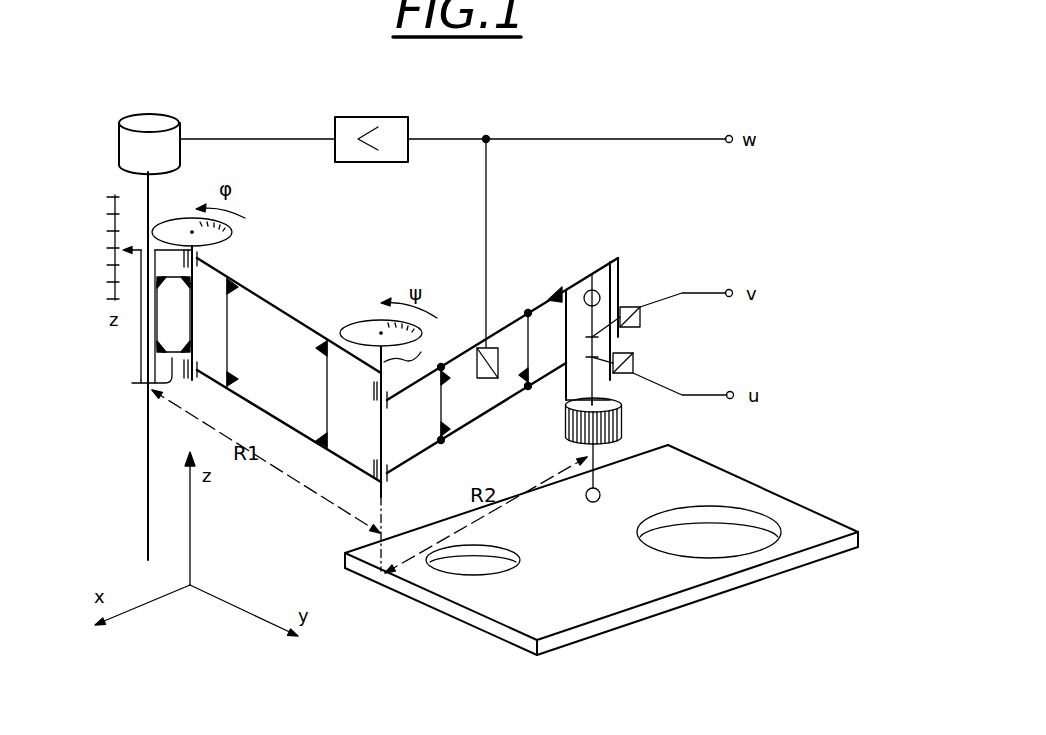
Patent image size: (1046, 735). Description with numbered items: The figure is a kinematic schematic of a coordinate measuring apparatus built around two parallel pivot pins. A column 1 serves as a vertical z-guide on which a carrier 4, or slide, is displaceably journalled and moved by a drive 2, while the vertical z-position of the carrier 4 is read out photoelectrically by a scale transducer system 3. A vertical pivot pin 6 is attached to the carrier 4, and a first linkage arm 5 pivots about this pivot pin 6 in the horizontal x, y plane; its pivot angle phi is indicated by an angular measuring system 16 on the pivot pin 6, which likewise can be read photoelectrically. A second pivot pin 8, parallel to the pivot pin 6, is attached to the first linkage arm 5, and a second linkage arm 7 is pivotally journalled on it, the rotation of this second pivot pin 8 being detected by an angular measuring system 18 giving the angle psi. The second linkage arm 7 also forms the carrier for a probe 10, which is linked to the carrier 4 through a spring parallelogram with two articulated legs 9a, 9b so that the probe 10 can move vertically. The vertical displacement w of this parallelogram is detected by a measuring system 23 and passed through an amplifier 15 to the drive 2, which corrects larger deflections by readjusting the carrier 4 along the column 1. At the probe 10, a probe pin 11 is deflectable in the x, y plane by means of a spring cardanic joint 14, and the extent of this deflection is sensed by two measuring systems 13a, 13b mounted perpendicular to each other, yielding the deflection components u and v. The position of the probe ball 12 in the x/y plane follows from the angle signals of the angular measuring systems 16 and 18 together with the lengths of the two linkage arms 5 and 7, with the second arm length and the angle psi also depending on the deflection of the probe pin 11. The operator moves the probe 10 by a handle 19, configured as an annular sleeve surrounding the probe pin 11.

The column 1 is at (147, 492).
The drive 2 is at (162, 122).
The scale transducer system 3 is at (125, 228).
The carrier 4 is at (132, 383).
The first linkage arm 5 is at (273, 302).
The pivot pin 6 is at (203, 244).
The second linkage arm 7 is at (418, 452).
The second pivot pin 8 is at (414, 347).
The articulated leg 9a is at (510, 324).
The articulated leg 9b is at (492, 408).
The probe 10 is at (552, 283).
The probe pin 11 is at (598, 384).
The probe ball 12 is at (600, 493).
The measuring system 13a is at (636, 369).
The measuring system 13b is at (636, 303).
The spring cardanic joint 14 is at (588, 273).
The amplifier 15 is at (400, 125).
The angular measuring system 16 is at (205, 240).
The angular measuring system 18 is at (355, 330).
The handle 19 is at (622, 425).
The measuring system 23 is at (478, 346).